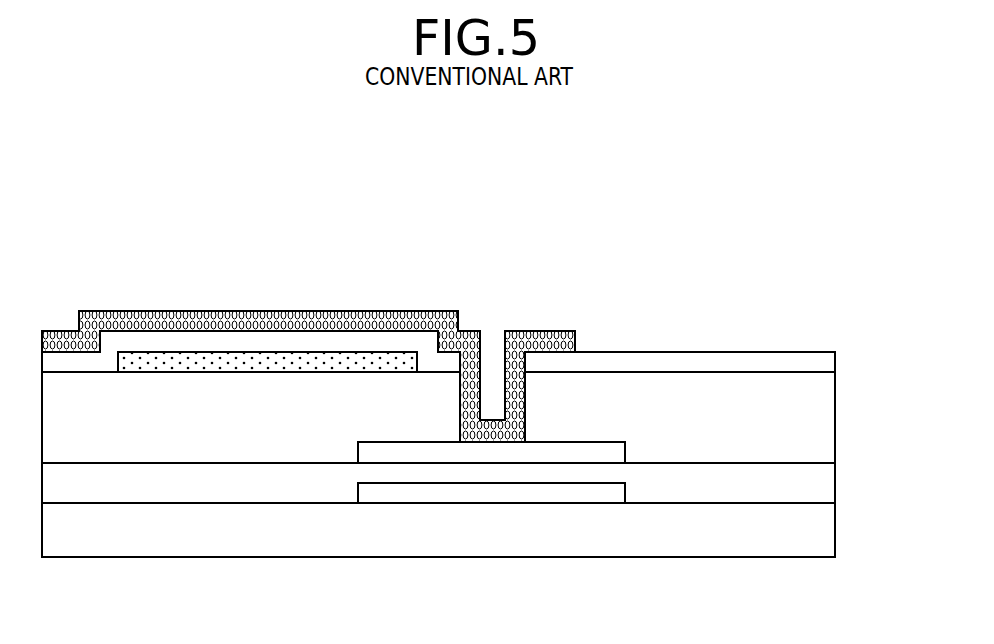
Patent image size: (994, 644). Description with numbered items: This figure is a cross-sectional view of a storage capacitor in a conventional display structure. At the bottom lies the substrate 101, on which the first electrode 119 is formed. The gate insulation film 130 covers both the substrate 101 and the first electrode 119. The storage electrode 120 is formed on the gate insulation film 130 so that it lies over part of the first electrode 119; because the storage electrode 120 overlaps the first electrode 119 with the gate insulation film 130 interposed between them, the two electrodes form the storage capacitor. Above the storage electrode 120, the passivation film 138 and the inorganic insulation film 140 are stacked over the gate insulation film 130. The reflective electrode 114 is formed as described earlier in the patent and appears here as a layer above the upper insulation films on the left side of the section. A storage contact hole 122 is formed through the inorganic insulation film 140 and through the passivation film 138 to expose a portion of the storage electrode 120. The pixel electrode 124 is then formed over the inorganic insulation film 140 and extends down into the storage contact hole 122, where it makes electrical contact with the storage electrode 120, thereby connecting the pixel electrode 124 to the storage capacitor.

The substrate 101 is at (820, 535).
The gate insulation film 130 is at (820, 488).
The first electrode 119 is at (580, 492).
The passivation film 138 is at (820, 425).
The storage electrode 120 is at (617, 452).
The inorganic insulation film 140 is at (820, 361).
The reflective electrode 114 is at (312, 352).
The pixel electrode 124 is at (549, 345).
The storage contact hole 122 is at (495, 327).